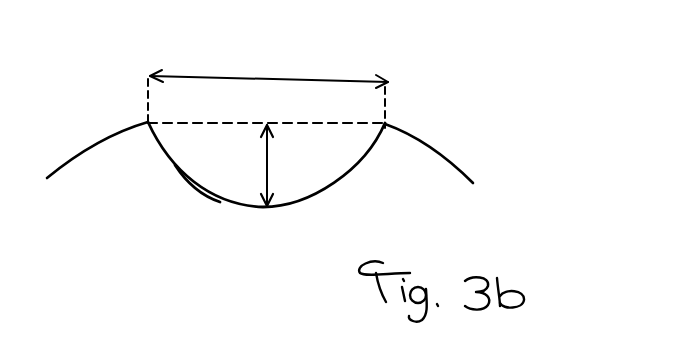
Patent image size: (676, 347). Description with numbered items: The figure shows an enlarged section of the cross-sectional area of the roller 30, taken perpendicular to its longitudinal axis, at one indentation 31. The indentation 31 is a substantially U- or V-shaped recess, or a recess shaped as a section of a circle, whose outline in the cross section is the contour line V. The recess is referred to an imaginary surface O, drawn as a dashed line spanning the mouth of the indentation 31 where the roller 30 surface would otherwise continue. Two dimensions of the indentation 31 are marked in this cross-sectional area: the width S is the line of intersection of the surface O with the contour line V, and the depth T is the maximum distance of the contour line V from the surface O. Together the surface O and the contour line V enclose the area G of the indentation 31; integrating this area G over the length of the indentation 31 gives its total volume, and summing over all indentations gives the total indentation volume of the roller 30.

The roller 30 is at (432, 195).
The indentation 31 is at (203, 148).
The area of the indentation G is at (332, 163).
The width of the indentation S is at (269, 66).
The imaginary surface of the indentation O is at (347, 125).
The depth of the indentation T is at (293, 168).
The contour line V is at (199, 186).